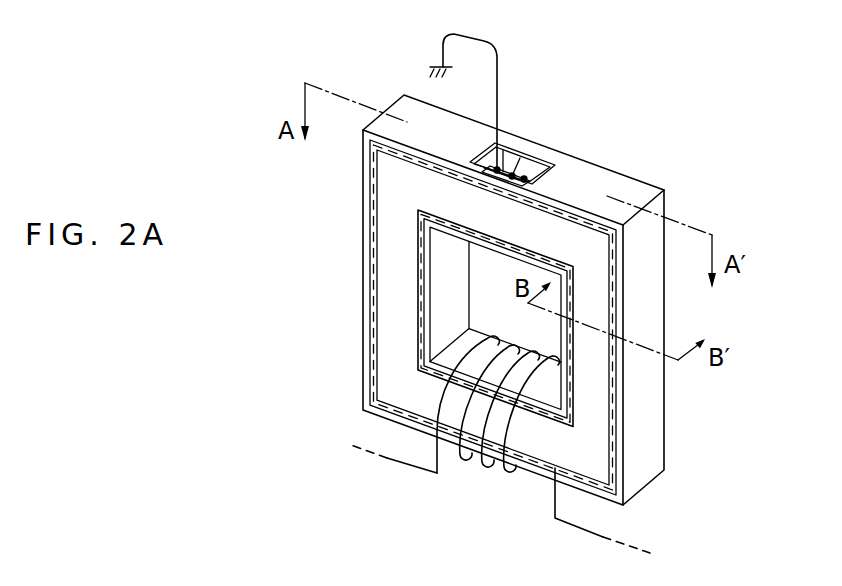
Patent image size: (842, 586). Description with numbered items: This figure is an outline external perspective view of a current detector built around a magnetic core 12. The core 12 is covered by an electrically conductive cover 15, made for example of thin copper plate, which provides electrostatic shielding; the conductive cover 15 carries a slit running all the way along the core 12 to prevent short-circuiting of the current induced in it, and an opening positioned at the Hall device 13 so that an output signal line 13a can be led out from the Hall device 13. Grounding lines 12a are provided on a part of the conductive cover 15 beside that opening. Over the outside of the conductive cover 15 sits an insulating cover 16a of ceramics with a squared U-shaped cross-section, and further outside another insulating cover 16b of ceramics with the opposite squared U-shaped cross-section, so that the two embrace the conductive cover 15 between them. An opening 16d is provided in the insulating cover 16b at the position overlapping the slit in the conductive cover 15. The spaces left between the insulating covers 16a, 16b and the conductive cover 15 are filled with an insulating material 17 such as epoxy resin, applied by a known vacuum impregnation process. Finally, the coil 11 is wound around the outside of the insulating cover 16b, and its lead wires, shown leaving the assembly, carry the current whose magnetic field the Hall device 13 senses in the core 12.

The coil 11 is at (465, 460).
The core 12 is at (580, 160).
The grounding lines 12a is at (473, 42).
The Hall device 13 is at (543, 170).
The output signal line 13a is at (520, 158).
The electrically conductive cover 15 is at (503, 164).
The insulating cover 16a is at (600, 448).
The insulating cover 16b is at (648, 422).
The opening 16d is at (540, 143).
The insulating material 17 is at (617, 472).